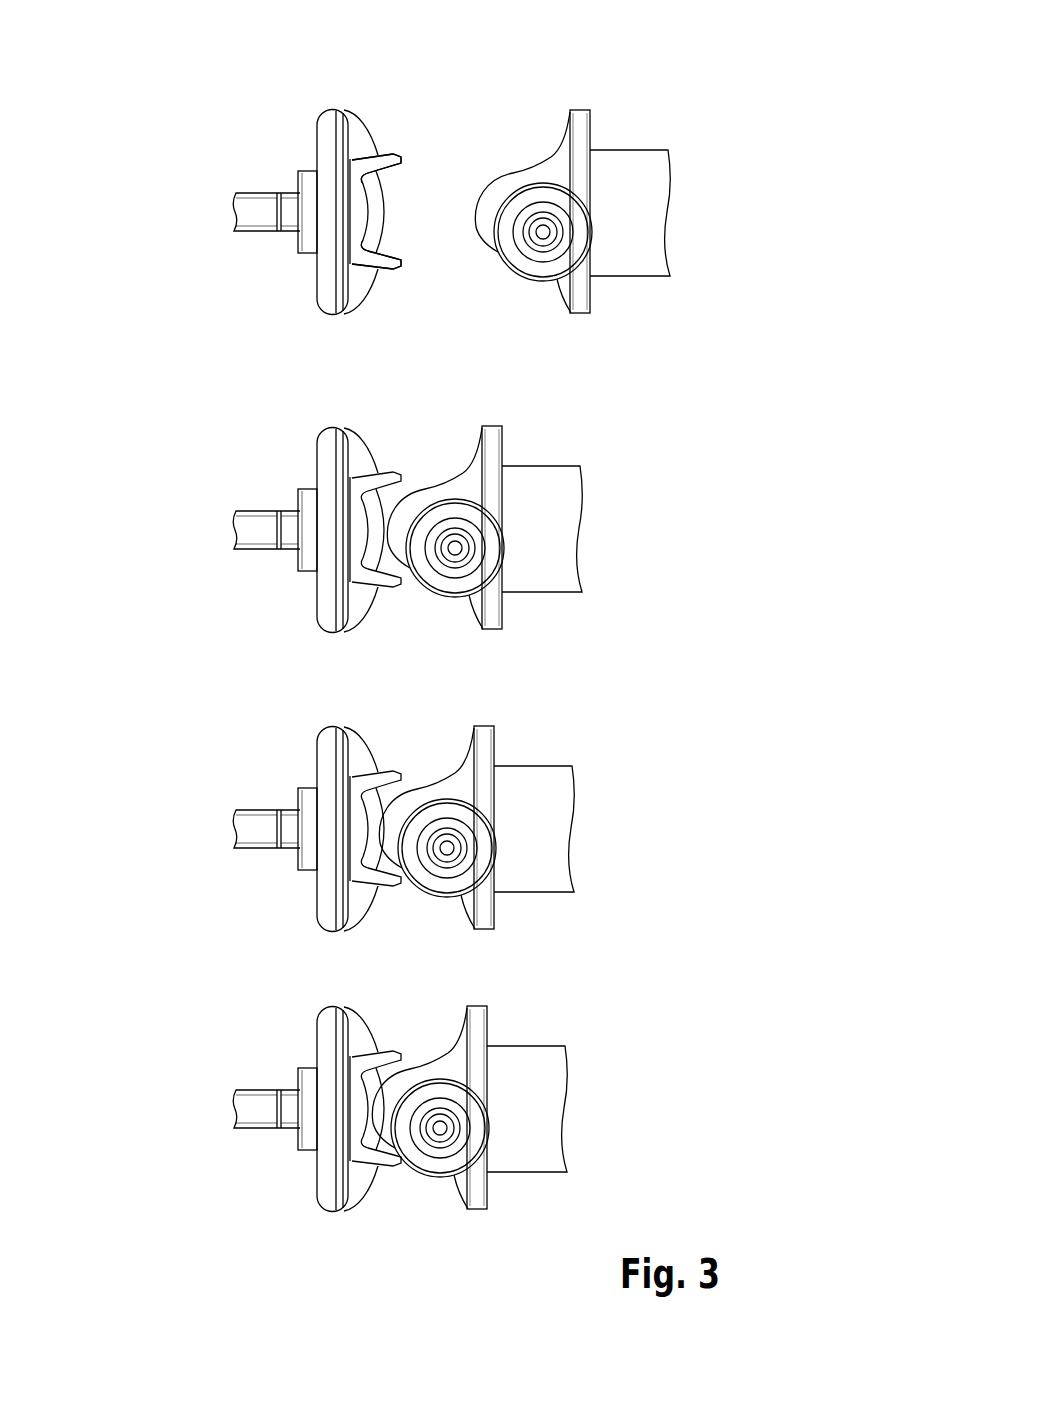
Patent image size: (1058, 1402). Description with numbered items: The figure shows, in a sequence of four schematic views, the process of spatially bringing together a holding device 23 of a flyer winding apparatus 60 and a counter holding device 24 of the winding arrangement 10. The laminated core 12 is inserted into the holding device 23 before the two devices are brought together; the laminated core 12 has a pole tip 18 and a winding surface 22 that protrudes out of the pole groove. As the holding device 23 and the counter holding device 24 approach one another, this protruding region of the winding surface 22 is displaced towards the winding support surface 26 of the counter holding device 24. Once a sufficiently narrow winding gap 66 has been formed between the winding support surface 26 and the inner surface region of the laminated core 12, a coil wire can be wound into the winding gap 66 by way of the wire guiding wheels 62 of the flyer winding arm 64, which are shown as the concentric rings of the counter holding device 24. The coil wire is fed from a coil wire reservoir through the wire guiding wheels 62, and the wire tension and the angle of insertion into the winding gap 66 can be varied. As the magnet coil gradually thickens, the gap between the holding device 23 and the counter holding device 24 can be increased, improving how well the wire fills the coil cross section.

The connection arrangement 10 is at (572, 189).
The flyer winding apparatus 60 is at (572, 189).
The laminated core 12 is at (390, 154).
The pole tip 18 is at (404, 182).
The winding surface 22 is at (402, 251).
The holding device 23 is at (366, 112).
The counter holding device 24 is at (627, 253).
The winding support surface 26 is at (481, 182).
The wire guiding wheels 62 is at (543, 278).
The flyer winding arm 64 is at (538, 268).
The winding gap 66 is at (376, 1156).